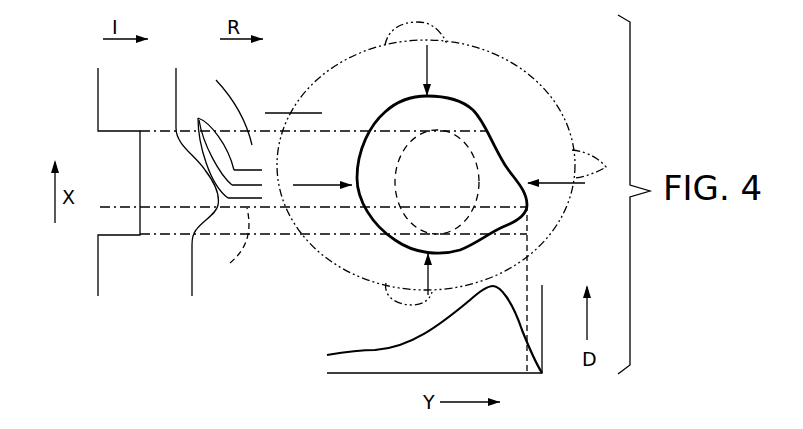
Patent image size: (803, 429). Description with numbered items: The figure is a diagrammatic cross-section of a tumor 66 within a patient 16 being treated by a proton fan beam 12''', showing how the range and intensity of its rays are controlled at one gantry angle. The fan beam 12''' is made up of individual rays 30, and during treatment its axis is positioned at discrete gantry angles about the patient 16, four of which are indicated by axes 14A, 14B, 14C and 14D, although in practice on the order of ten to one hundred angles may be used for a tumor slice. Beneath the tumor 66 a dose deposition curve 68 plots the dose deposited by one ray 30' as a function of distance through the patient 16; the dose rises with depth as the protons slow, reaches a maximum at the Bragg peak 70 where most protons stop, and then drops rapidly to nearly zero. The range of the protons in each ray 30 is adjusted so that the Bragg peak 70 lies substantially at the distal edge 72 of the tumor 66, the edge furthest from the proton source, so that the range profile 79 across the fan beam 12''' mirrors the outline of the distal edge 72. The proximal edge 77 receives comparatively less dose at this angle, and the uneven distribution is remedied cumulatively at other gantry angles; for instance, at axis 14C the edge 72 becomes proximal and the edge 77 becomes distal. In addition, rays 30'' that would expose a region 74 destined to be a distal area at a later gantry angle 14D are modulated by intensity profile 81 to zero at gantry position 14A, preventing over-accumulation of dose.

The intensity profile 81 is at (97, 260).
The range profile 79 is at (190, 268).
The ray 30 is at (223, 144).
The proton fan beam 12''' is at (225, 99).
The rays exposing region of tumor 30'' is at (293, 81).
The one ray of the fan beam 30' is at (230, 250).
The patient 16 is at (467, 45).
The distal edge of tumor 72 is at (502, 134).
The region of tumor 74 is at (386, 110).
The proximal edge of tumor 77 is at (390, 224).
The tumor 66 is at (377, 159).
The fan beam axis at first gantry angle 14A is at (315, 186).
The fan beam axis at second gantry angle 14B is at (427, 60).
The fan beam axis at third gantry angle 14C is at (550, 186).
The fan beam axis at fourth gantry angle 14D is at (428, 280).
The dose deposition curve 68 is at (358, 352).
The Bragg peak 70 is at (505, 285).